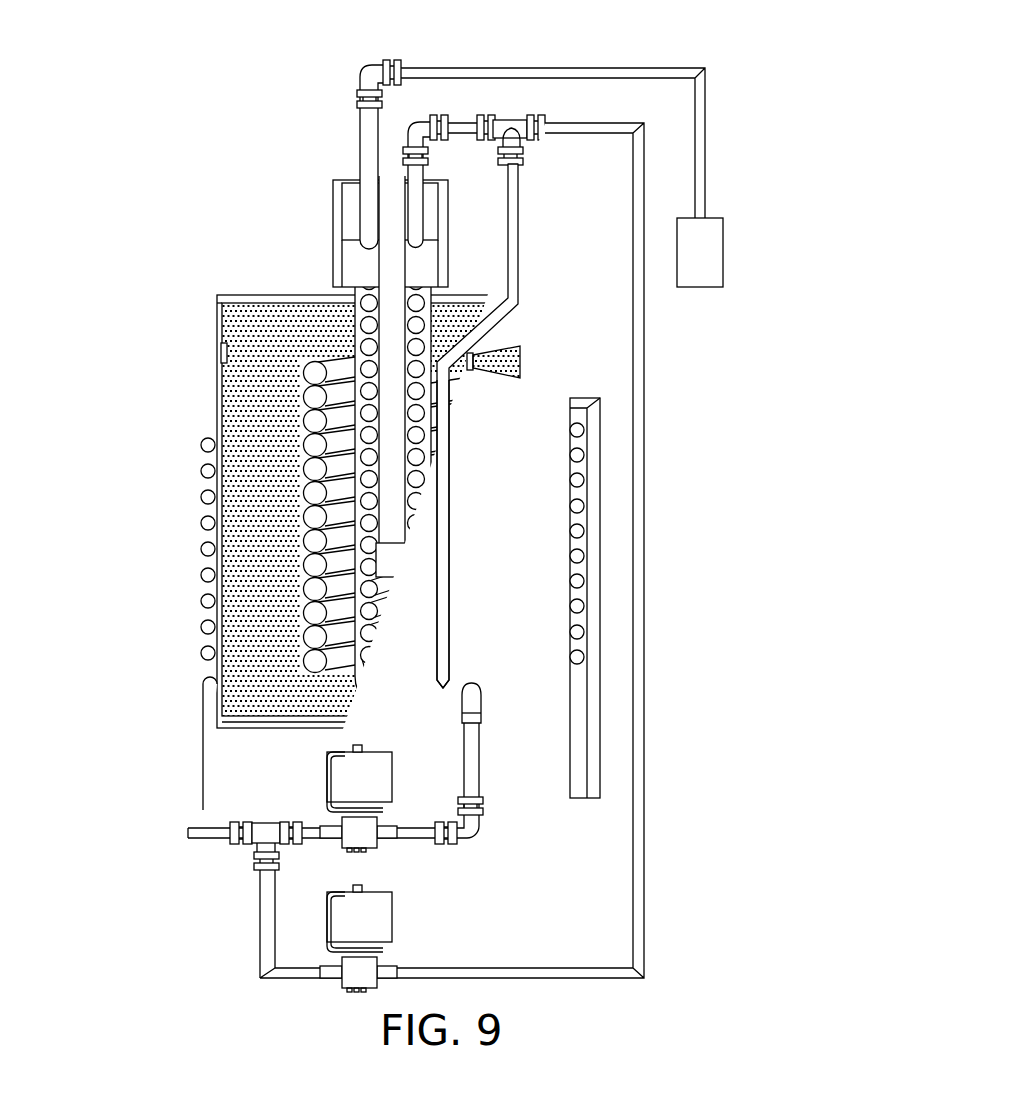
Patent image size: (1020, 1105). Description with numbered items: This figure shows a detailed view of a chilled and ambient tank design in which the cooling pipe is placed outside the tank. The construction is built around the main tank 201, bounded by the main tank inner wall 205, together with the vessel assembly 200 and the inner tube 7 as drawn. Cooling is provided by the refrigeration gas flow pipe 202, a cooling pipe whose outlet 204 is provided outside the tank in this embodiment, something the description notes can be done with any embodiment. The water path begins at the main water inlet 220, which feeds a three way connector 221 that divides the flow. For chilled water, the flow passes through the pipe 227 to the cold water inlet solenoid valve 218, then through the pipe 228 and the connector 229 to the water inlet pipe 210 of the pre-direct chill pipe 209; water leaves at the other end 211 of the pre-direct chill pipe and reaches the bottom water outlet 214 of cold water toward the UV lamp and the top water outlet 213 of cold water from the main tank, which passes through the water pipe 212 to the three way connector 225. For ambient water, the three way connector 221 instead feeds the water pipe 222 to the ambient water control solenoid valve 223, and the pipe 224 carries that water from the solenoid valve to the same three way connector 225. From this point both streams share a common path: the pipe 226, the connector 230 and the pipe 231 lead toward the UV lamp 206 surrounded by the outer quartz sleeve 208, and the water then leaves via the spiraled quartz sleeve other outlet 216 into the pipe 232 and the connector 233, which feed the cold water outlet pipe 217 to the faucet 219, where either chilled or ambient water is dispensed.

The inner tube 7 is at (425, 260).
The heating vessel 200 is at (350, 325).
The main tank 201 is at (217, 312).
The refrigeration gas flow pipe 202 is at (208, 600).
The outlet of refrigeration gas flow pipe 204 is at (572, 797).
The main tank inner wall 205 is at (222, 358).
The UV lamp 206 is at (345, 197).
The outer quartz sleeve 208 is at (203, 790).
The pre-direct chill pipe 209 is at (482, 500).
The water inlet pipe to pre-direct chill pipe 210 is at (481, 760).
The other end of pre-direct chill pipe 211 is at (520, 350).
The water pipe to 3 way connector 212 is at (518, 192).
The water outlet of cold water from the main tank 213 is at (440, 332).
The water outlet of cold water toward UV 214 is at (443, 700).
The spiraled quartz sleeve other outlet 216 is at (362, 258).
The cold water outlet pipe to faucet 217 is at (598, 68).
The cold water inlet solenoid valve 218 is at (385, 790).
The faucet 219 is at (700, 287).
The main water inlet 220 is at (210, 838).
The 3 way connector 221 is at (266, 828).
The water pipe to ambient water control solenoid valve 222 is at (260, 936).
The ambient water control solenoid valve 223 is at (395, 925).
The pipe between ambient water control solenoid valve and 3 way connector 224 is at (645, 133).
The 3 way connector 225 is at (512, 118).
The pipe 226 is at (450, 115).
The pipe 227 is at (300, 838).
The pipe 228 is at (428, 838).
The connector 229 is at (480, 835).
The connector 230 is at (412, 52).
The pipe 231 is at (423, 195).
The pipe 232 is at (360, 128).
The connector 233 is at (362, 72).